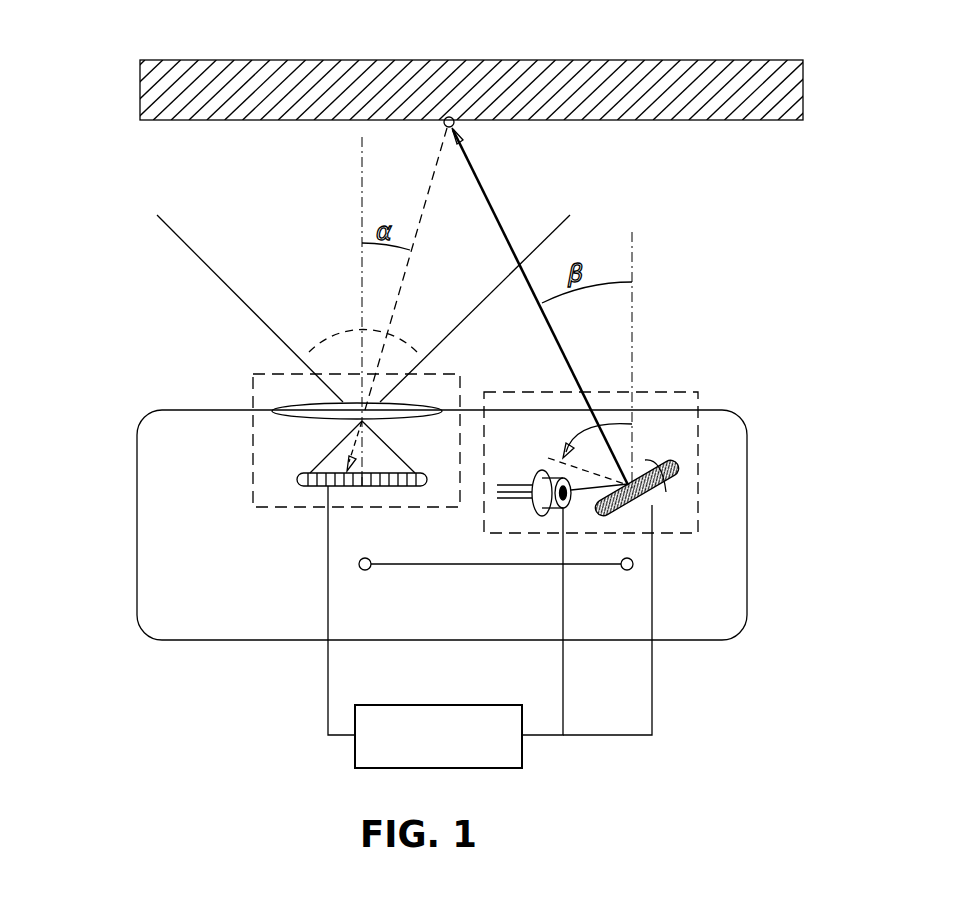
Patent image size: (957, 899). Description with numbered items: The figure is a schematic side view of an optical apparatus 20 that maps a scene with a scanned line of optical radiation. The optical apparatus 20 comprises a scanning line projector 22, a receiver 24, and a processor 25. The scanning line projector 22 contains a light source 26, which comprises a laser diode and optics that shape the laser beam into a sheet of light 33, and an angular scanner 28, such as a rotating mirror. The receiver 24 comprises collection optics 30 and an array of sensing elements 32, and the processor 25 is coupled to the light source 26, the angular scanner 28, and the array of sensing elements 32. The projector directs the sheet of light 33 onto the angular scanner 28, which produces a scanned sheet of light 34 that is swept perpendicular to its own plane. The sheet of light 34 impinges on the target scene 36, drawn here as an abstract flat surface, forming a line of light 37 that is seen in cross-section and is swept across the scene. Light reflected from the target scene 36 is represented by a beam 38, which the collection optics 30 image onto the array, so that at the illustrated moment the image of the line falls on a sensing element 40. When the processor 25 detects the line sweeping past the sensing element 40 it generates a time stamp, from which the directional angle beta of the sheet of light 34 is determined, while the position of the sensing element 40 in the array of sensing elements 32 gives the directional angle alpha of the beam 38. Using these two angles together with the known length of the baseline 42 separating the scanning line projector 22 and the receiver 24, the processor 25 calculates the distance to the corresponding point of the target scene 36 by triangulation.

The optical apparatus 20 is at (103, 335).
The scanning line projector 22 is at (700, 432).
The receiver 24 is at (253, 463).
The processor 25 is at (458, 704).
The light source 26 is at (545, 470).
The angular scanner 28 is at (678, 464).
The collection optics 30 is at (290, 408).
The array of sensing elements 32 is at (313, 487).
The sheet of light 33 is at (615, 504).
The sheet of light 34 is at (477, 173).
The target scene 36 is at (792, 97).
The line of light 37 is at (449, 117).
The beam 38 is at (432, 168).
The sensing element 40 is at (375, 488).
The baseline 42 is at (428, 567).